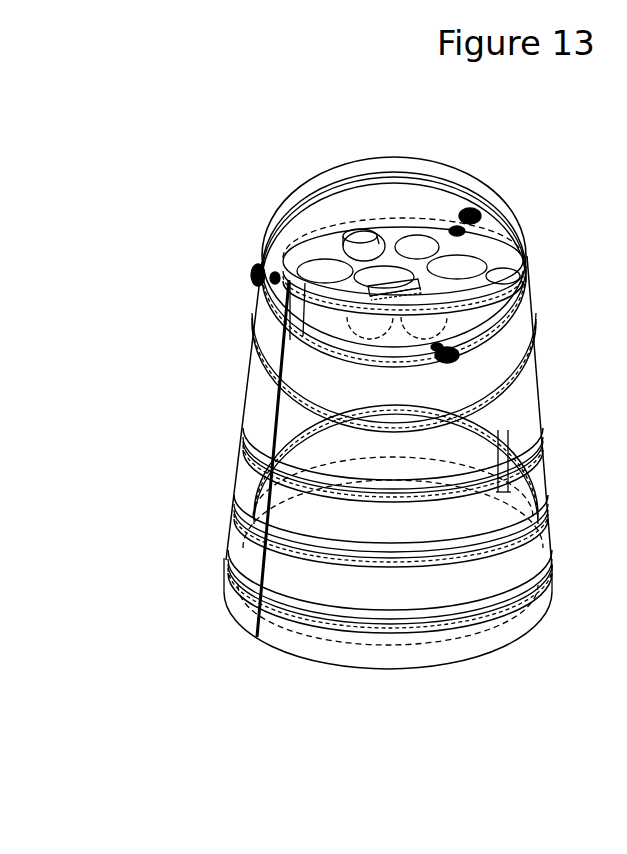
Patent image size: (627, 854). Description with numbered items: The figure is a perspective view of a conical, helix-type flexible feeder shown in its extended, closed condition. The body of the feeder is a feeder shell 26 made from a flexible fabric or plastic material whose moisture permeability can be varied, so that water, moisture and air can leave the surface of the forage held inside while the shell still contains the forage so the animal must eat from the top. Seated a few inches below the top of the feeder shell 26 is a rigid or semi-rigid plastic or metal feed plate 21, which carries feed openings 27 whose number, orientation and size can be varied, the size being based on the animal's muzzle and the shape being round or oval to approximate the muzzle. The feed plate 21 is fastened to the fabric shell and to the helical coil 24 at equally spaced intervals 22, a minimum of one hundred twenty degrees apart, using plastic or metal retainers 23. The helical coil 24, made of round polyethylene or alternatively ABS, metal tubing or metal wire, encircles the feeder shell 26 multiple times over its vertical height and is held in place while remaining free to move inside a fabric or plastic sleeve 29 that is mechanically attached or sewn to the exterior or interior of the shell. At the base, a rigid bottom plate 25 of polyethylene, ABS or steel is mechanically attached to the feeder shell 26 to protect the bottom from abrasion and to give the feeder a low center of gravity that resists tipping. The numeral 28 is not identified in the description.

The feed plate 21 is at (330, 250).
The equally spaced intervals 22 is at (256, 258).
The retainers 23 is at (263, 260).
The helical coil 24 is at (250, 570).
The bottom plate 25 is at (293, 653).
The feeder shell 26 is at (308, 565).
The feed openings 27 is at (383, 238).
The support bar 28 is at (369, 279).
The sleeve 29 is at (288, 404).